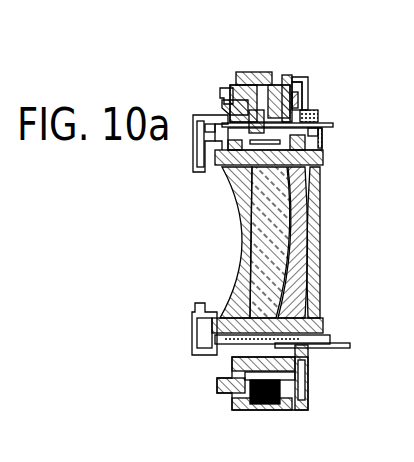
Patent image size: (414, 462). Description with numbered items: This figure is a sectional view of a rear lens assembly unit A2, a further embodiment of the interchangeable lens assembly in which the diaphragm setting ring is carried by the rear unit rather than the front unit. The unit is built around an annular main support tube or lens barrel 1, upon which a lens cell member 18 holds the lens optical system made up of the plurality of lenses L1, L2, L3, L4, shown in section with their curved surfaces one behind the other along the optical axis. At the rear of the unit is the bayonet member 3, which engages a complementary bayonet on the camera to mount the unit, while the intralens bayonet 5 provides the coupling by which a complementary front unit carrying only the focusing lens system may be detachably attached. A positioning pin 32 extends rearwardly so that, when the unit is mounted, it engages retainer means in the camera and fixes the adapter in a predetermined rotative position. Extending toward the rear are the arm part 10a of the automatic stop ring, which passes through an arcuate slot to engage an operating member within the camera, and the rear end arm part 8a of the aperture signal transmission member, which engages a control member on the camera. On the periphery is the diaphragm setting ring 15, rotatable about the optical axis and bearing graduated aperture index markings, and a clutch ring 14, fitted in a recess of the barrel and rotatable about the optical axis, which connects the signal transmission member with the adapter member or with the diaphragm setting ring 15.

The lens barrel 1 is at (281, 80).
The bayonet member 3 is at (309, 80).
The intralens bayonet 5 is at (221, 92).
The rear end arm part 8a is at (345, 350).
The arm part 10a is at (333, 125).
The clutch ring 14 is at (268, 402).
The diaphragm setting ring 15 is at (252, 74).
The lens cell member 18 is at (323, 163).
The positioning pin 32 is at (305, 97).
The rear lens assembly unit A2 is at (252, 242).
The lens L1 is at (313, 229).
The lens L2 is at (297, 273).
The lens L3 is at (268, 258).
The lens L4 is at (247, 228).